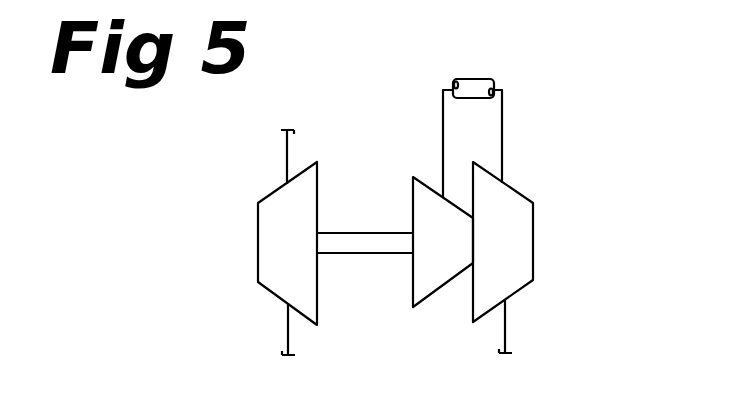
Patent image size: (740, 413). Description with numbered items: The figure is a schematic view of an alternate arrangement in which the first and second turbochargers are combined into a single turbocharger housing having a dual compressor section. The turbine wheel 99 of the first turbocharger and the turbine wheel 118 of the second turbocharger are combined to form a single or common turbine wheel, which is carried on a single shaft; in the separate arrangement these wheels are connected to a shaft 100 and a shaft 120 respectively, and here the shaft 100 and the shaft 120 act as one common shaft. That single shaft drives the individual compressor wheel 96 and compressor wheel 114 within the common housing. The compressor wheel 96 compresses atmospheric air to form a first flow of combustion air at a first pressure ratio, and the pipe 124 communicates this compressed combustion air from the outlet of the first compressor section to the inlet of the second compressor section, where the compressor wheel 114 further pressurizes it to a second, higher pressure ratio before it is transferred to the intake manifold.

The compressor wheel 96 is at (428, 186).
The turbine wheel 99 is at (268, 195).
The shaft 100 is at (378, 253).
The compressor wheel 114 is at (513, 190).
The turbine wheel 118 is at (284, 184).
The shaft 120 is at (352, 253).
The pipe 124 is at (472, 79).